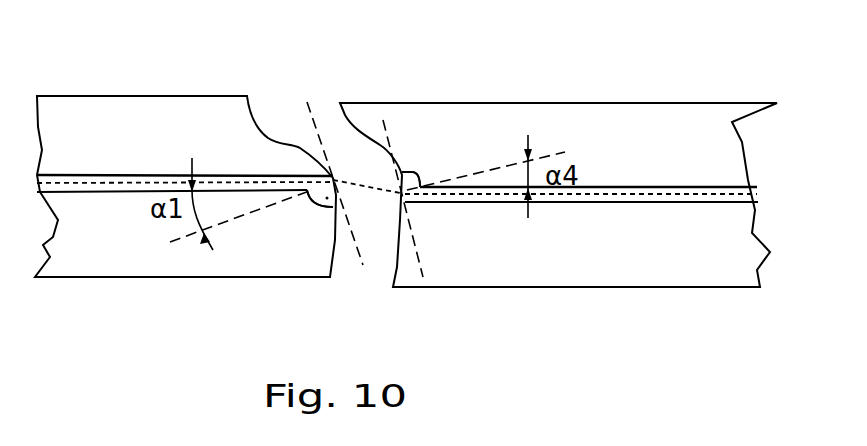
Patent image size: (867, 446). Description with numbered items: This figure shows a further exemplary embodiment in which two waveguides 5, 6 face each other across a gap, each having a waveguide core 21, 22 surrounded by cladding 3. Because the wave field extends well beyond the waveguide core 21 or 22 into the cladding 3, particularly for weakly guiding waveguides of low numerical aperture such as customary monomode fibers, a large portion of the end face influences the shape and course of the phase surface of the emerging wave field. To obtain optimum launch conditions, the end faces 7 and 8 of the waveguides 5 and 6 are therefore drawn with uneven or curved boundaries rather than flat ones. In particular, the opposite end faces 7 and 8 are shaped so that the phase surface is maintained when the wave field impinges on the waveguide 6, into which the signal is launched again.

The cladding 3 is at (205, 118).
The waveguide 5 is at (138, 278).
The waveguide 6 is at (642, 287).
The end face 7 is at (335, 238).
The end face 8 is at (403, 257).
The waveguide core 21 is at (82, 193).
The waveguide core 22 is at (592, 203).